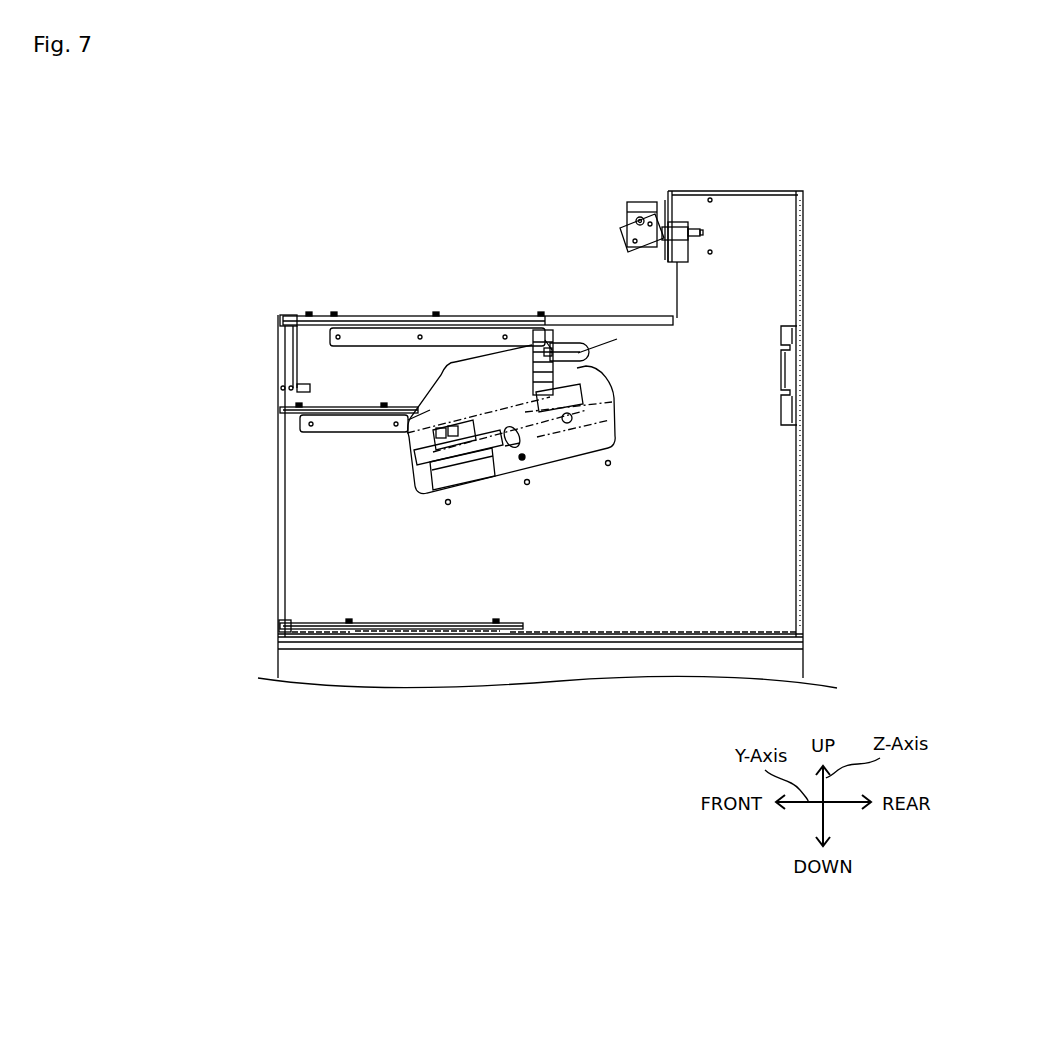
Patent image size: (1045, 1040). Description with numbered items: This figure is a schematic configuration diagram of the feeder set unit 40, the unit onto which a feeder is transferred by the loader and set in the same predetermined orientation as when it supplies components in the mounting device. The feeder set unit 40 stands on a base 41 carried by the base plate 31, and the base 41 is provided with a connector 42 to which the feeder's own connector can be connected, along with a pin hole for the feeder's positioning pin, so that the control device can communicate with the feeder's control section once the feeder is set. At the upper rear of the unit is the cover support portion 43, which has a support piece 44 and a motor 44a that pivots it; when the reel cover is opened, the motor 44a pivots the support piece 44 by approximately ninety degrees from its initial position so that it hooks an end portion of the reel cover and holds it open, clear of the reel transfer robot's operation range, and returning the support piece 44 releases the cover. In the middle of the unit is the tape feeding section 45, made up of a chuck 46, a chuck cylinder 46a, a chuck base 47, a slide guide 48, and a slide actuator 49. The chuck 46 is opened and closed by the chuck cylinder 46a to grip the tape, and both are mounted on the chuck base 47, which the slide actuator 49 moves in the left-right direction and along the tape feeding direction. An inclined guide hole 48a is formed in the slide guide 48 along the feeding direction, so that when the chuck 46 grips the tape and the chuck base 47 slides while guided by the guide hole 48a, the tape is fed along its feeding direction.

The base plate 31 is at (803, 667).
The feeder set unit 40 is at (866, 126).
The base 41 is at (803, 458).
The connector 42 is at (785, 370).
The cover support portion 43 is at (664, 160).
The support piece 44 is at (633, 249).
The motor 44a is at (637, 203).
The tape feeding section 45 is at (486, 220).
The chuck 46 is at (566, 350).
The chuck cylinder 46a is at (543, 390).
The chuck base 47 is at (513, 430).
The slide guide 48 is at (513, 450).
The guide hole 48a is at (505, 442).
The slide actuator 49 is at (440, 484).